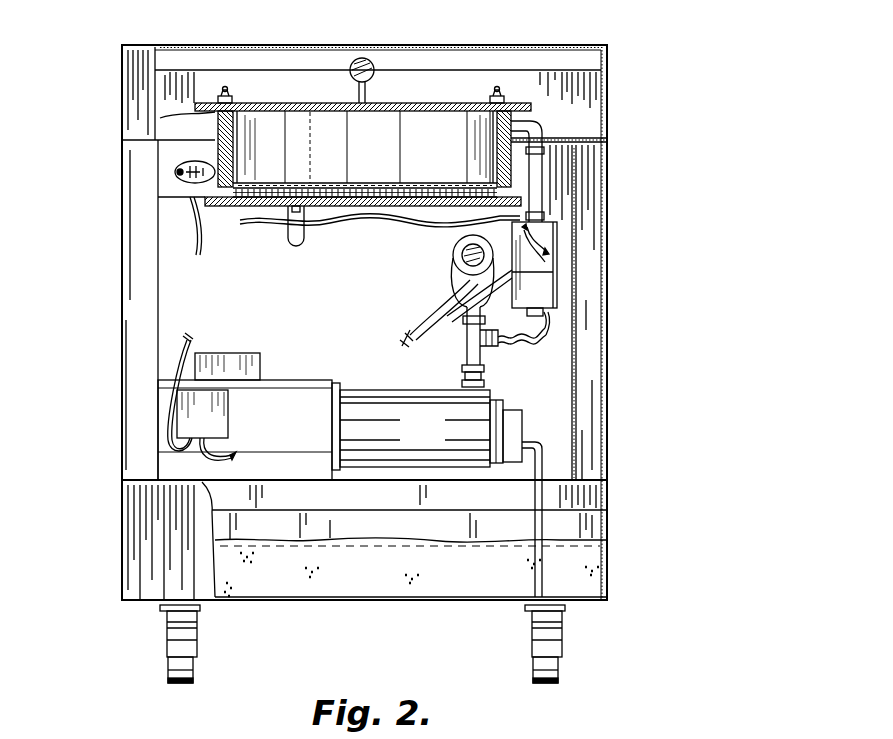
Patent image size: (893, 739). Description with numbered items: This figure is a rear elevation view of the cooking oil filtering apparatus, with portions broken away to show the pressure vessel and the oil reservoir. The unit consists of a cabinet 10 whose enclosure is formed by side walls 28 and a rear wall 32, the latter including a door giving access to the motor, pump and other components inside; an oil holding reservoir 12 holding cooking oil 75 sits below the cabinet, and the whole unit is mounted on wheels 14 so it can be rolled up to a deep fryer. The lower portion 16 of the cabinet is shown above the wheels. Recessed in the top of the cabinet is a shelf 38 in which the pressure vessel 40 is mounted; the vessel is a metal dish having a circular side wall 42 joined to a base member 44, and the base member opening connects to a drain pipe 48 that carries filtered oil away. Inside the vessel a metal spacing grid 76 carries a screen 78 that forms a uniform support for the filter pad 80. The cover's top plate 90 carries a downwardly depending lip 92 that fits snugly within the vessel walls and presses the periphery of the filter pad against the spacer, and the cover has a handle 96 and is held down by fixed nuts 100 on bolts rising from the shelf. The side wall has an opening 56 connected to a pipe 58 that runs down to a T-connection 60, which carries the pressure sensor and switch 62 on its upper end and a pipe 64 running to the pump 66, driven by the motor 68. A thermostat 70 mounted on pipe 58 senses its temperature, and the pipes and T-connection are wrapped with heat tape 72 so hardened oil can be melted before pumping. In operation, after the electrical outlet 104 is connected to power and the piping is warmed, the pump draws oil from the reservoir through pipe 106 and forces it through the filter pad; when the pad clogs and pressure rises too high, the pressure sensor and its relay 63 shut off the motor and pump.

The cabinet 10 is at (616, 403).
The oil holding reservoir 12 is at (353, 535).
The wheels 14 is at (168, 678).
The base 16 is at (570, 500).
The side walls 28 is at (607, 272).
The rear wall 32 is at (586, 87).
The shelf 38 is at (590, 138).
The pressure vessel 40 is at (310, 112).
The circular side wall 42 is at (160, 118).
The base member 44 is at (245, 206).
The drain pipe 48 is at (287, 208).
The opening 56 is at (498, 125).
The pipe 58 is at (545, 125).
The T-connection 60 is at (466, 338).
The pressure sensor and switch 62 is at (462, 305).
The relay 63 is at (210, 405).
The pipe 64 is at (485, 375).
The pump 66 is at (415, 442).
The motor 68 is at (332, 415).
The thermostat 70 is at (545, 242).
The heat tape 72 is at (347, 224).
The cooking oil 75 is at (450, 578).
The metal spacing grid 76 is at (290, 185).
The screen 78 is at (340, 185).
The filter pad 80 is at (388, 185).
The top plate 90 is at (408, 103).
The lip 92 is at (233, 137).
The handle 96 is at (367, 60).
The fixed nuts 100 is at (224, 86).
The electrical outlet 104 is at (178, 172).
The pipe 106 is at (545, 560).